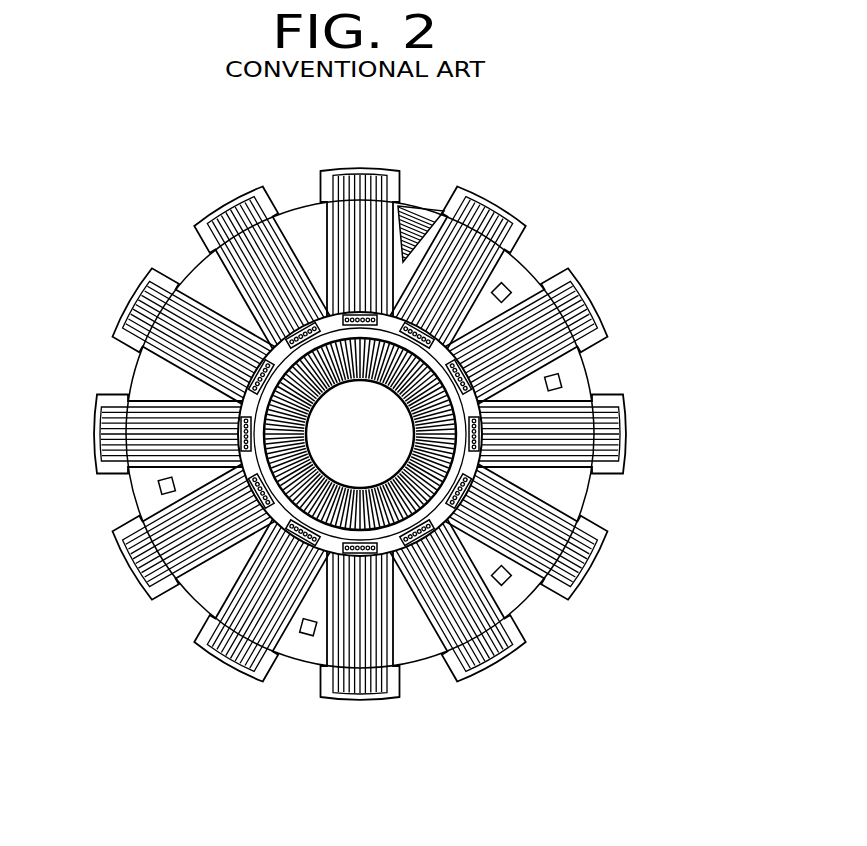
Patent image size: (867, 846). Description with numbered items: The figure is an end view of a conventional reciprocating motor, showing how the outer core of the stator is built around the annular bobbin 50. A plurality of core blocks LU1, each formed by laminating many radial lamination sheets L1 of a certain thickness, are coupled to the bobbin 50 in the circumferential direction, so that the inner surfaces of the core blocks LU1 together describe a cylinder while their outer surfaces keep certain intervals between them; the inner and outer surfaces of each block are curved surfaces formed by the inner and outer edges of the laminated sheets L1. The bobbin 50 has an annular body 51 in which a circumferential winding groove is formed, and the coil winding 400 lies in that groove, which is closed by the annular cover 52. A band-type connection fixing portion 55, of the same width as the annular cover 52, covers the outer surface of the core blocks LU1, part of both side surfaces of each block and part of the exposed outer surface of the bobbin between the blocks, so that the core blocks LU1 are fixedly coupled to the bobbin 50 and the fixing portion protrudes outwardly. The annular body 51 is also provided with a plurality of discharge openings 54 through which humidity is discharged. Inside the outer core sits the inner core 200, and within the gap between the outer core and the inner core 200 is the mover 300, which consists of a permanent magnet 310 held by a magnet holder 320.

The bobbin 50 is at (543, 259).
The annular body 51 is at (510, 273).
The annular cover 52 is at (420, 211).
The discharge openings 54 is at (212, 291).
The connection fixing portion 55 is at (357, 172).
The inner core 200 is at (297, 633).
The mover 300 is at (113, 662).
The permanent magnet 310 is at (252, 638).
The magnet holder 320 is at (230, 545).
The coil winding 400 is at (404, 215).
The lamination sheets L1 is at (588, 549).
The core blocks LU1 is at (484, 546).